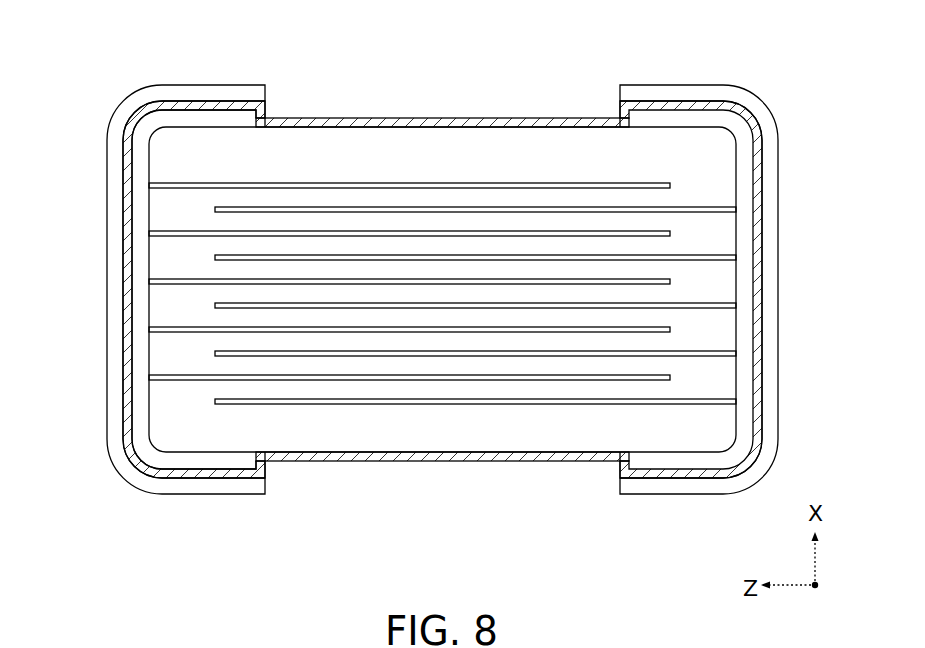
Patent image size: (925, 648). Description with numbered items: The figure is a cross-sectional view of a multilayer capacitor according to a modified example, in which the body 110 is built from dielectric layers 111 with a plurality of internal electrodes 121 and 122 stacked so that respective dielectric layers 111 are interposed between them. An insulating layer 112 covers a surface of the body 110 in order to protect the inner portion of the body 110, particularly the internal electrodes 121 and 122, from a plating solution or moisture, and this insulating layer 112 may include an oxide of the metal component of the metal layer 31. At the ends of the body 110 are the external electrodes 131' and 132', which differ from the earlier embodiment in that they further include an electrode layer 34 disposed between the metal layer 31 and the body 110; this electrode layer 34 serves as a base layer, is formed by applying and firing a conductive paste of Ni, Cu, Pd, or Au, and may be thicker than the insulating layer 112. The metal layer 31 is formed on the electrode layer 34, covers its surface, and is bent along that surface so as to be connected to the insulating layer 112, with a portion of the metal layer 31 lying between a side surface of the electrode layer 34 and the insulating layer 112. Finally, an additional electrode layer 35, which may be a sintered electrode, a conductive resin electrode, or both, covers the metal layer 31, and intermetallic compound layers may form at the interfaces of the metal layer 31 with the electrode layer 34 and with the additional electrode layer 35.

The body 110 is at (442, 260).
The dielectric layers 111 is at (488, 200).
The insulating layer 112 is at (315, 117).
The internal electrode 121 is at (535, 183).
The internal electrode 122 is at (600, 208).
The external electrode 131' is at (151, 247).
The external electrode 132' is at (709, 247).
The metal layer 31 is at (128, 307).
The electrode layer 34 is at (143, 268).
The additional electrode layer 35 is at (117, 355).